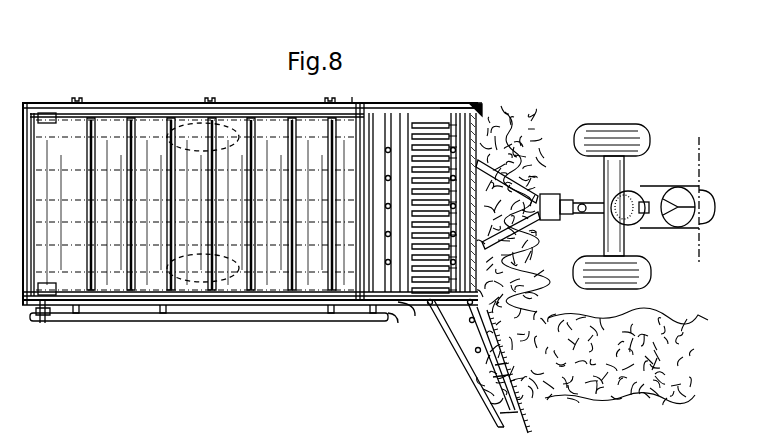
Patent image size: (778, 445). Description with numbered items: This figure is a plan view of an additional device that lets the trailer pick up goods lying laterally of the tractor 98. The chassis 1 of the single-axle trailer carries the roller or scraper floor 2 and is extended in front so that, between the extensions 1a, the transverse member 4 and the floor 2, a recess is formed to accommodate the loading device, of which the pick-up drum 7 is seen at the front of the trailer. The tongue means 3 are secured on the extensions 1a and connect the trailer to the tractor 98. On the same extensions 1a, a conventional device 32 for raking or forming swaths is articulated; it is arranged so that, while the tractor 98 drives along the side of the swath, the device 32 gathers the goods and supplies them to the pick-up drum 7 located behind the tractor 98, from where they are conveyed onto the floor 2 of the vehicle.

The chassis 1 is at (117, 105).
The extensions 1a is at (415, 318).
The roller or scraper floor 2 is at (248, 106).
The tongue means 3 is at (521, 194).
The transverse member 4 is at (476, 115).
The pick-up drum 7 is at (487, 113).
The device for raking or forming swaths 32 is at (484, 374).
The tractor 98 is at (648, 197).